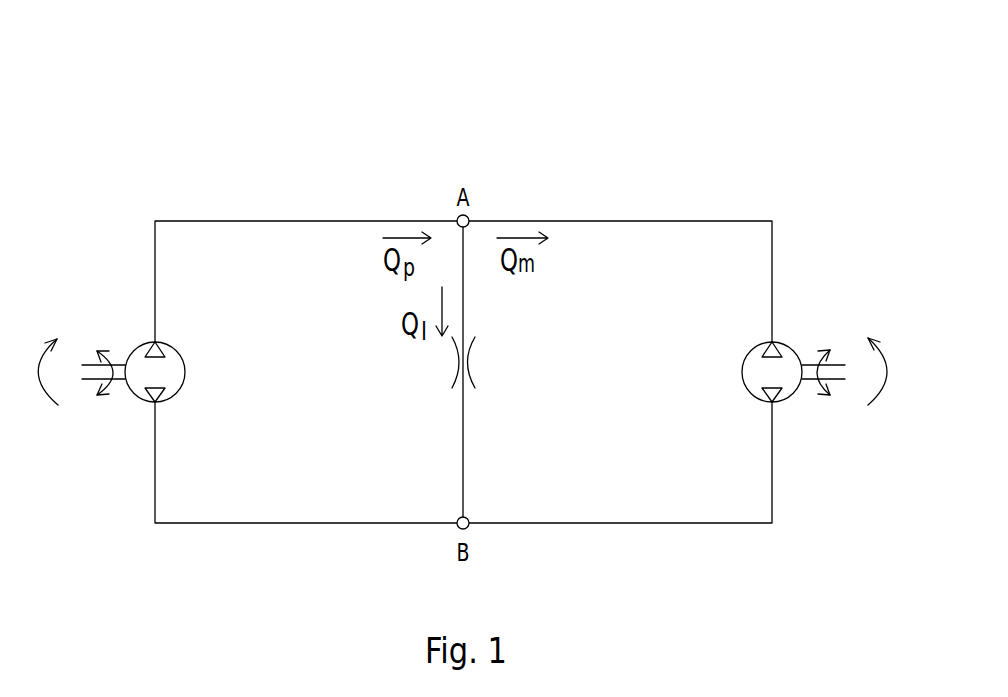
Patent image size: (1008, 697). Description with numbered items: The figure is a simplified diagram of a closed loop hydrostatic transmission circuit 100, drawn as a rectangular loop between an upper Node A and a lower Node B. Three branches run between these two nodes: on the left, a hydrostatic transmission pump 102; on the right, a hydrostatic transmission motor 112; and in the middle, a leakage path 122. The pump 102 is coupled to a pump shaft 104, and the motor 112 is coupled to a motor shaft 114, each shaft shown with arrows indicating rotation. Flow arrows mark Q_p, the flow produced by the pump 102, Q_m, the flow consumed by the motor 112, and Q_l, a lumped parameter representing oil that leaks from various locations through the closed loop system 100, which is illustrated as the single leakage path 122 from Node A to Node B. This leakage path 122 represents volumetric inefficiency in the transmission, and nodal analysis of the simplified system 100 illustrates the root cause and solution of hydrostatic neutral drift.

The hydrostatic transmission circuit 100 is at (608, 126).
The hydrostatic transmission pump 102 is at (185, 372).
The pump shaft 104 is at (90, 380).
The hydrostatic transmission motor 112 is at (743, 372).
The motor shaft 114 is at (837, 380).
The leakage path 122 is at (467, 360).